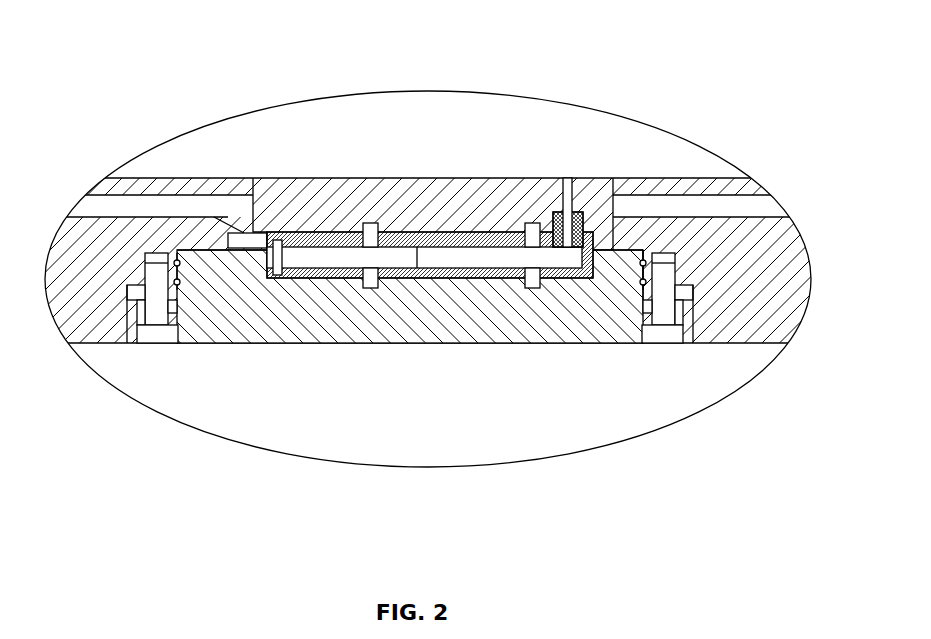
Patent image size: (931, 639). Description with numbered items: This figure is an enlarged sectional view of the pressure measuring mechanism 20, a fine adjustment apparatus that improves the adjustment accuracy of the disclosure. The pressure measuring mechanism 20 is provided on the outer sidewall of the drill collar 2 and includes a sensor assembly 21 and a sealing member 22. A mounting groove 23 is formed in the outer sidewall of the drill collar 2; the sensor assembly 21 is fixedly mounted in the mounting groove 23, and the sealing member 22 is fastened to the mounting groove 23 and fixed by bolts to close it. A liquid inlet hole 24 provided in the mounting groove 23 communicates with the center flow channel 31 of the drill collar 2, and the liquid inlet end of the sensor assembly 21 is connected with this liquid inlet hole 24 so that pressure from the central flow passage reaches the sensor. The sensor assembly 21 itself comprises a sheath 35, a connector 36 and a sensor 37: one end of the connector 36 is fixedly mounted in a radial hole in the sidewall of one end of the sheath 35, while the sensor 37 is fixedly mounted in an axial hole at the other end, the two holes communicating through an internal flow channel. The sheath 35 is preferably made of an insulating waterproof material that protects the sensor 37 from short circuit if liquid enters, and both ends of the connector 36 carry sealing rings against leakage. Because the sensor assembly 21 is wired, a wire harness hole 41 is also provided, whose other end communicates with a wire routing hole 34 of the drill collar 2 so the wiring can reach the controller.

The pressure measuring mechanism 20 is at (465, 288).
The drill collar 2 is at (465, 313).
The sensor assembly 21 is at (430, 399).
The sealing member 22 is at (302, 325).
The mounting groove 23 is at (232, 237).
The liquid inlet hole 24 is at (566, 200).
The center flow channel 31 is at (518, 157).
The wire routing hole 34 is at (172, 205).
The sheath 35 is at (430, 368).
The connector 36 is at (560, 250).
The sensor 37 is at (398, 258).
The wire harness hole 41 is at (226, 222).